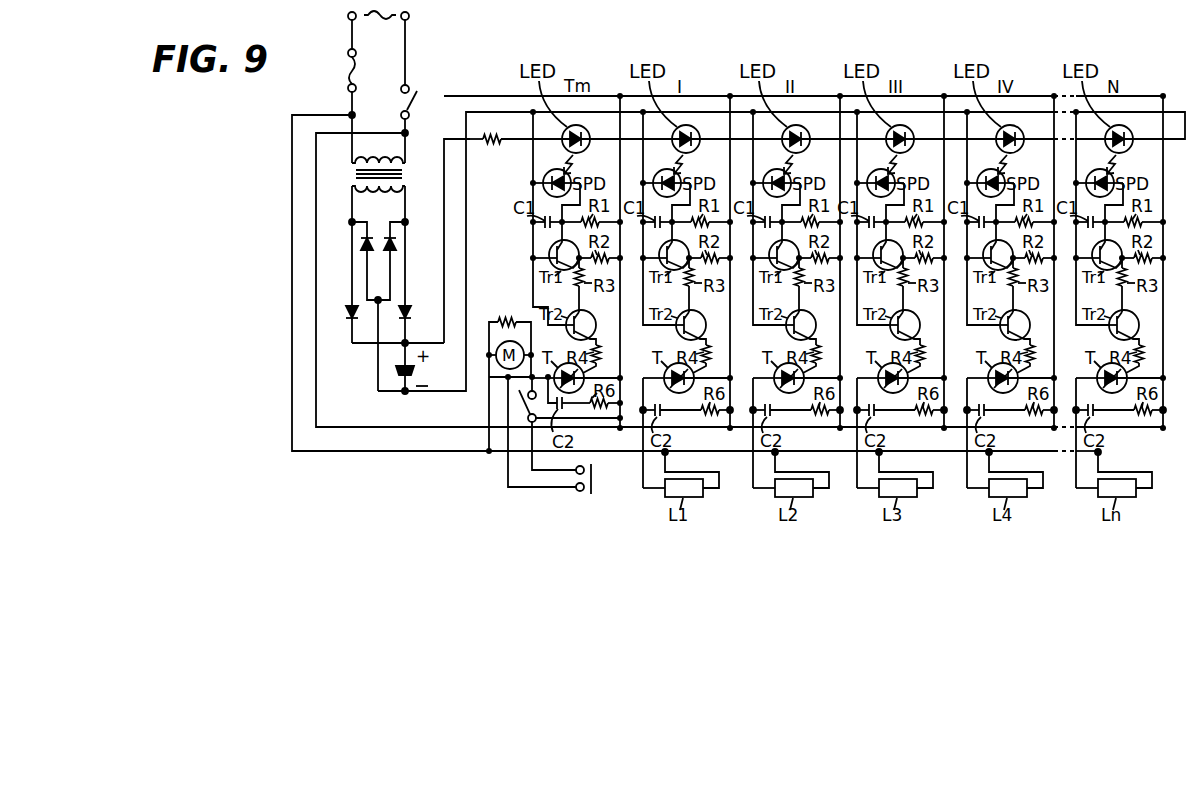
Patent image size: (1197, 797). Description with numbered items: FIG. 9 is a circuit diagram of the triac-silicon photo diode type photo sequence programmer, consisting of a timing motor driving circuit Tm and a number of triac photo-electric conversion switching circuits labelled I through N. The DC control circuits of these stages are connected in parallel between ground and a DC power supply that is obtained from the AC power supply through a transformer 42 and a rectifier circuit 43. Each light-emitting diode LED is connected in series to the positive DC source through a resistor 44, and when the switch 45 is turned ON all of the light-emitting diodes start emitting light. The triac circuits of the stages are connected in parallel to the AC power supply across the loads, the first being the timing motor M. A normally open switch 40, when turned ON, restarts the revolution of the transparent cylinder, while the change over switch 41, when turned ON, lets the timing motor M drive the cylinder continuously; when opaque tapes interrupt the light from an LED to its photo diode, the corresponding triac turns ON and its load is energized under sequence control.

The normally open switch 40 is at (598, 479).
The change over switch 41 is at (517, 404).
The transformer 42 is at (400, 176).
The rectifier circuit 43 is at (390, 305).
The resistor 44 is at (494, 144).
The switch 45 is at (401, 100).